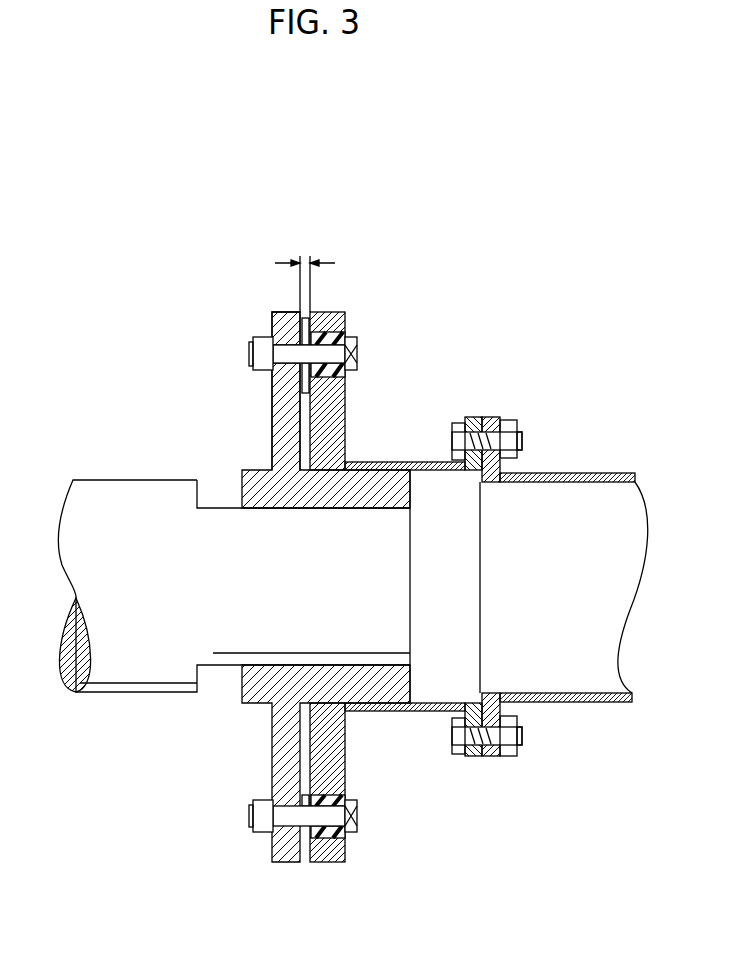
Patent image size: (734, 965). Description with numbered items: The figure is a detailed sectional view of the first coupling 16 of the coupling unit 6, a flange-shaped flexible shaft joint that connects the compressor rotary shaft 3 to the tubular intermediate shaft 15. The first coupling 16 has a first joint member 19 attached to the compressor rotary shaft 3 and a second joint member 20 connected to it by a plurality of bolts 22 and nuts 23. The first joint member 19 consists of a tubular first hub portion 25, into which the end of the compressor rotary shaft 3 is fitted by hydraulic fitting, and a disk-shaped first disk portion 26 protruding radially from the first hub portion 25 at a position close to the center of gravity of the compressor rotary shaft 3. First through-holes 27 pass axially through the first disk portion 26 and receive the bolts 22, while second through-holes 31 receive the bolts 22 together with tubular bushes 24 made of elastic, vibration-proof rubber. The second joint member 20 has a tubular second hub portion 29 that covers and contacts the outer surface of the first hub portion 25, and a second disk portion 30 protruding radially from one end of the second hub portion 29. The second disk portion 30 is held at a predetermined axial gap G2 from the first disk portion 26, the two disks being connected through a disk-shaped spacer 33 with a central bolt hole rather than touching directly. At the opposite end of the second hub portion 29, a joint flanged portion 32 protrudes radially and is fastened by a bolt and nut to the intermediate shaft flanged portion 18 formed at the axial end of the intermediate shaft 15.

The compressor rotary shaft 3 is at (241, 640).
The coupling unit 6 is at (488, 276).
The intermediate shaft 15 is at (572, 472).
The first coupling 16 is at (291, 591).
The intermediate shaft flanged portion 18 is at (497, 418).
The first joint member 19 is at (257, 700).
The second joint member 20 is at (362, 573).
The bolt 22 is at (288, 350).
The nut 23 is at (263, 337).
The bush 24 is at (345, 336).
The first hub portion 25 is at (248, 478).
The first disk portion 26 is at (272, 418).
The first through-hole 27 is at (272, 372).
The second hub portion 29 is at (420, 463).
The second disk portion 30 is at (340, 418).
The second through-hole 31 is at (348, 372).
The joint flanged portion 32 is at (471, 417).
The spacer 33 is at (308, 335).
The gap G2 is at (319, 274).